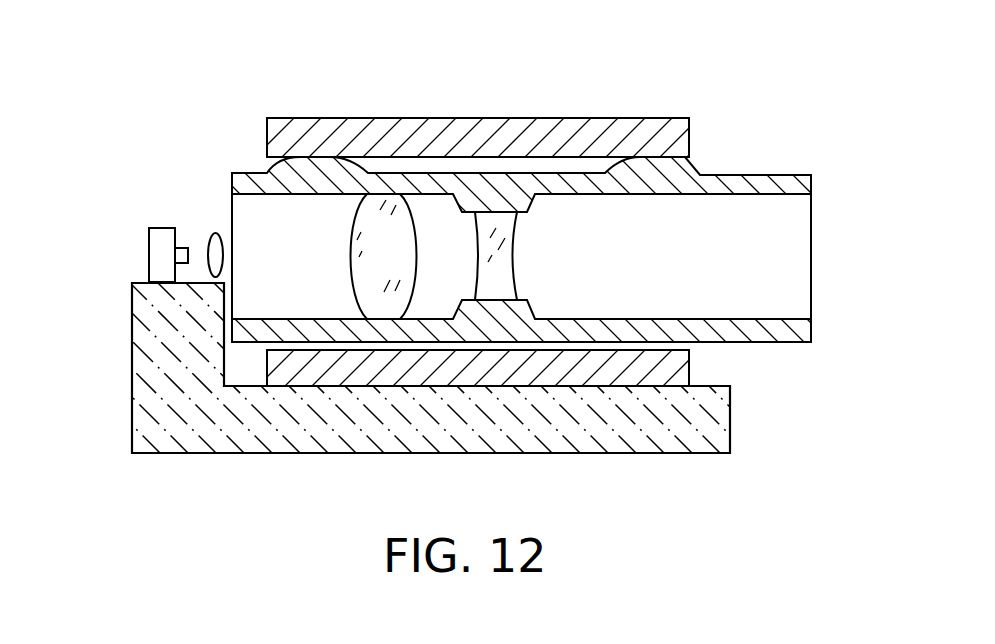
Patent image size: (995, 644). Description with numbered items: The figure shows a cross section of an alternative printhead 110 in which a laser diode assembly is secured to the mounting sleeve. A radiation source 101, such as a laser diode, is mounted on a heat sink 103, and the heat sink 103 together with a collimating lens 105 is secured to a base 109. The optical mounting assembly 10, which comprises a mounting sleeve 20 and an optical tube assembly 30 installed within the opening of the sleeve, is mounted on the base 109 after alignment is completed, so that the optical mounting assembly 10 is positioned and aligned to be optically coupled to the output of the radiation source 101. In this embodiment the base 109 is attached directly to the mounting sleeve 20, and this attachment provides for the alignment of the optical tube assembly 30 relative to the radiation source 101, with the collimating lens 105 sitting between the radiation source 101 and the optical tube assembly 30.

The optical mounting assembly 10 is at (529, 224).
The mounting sleeve 20 is at (690, 121).
The optical tube assembly 30 is at (812, 177).
The radiation source 101 is at (185, 247).
The heat sink 103 is at (149, 228).
The collimating lens 105 is at (211, 236).
The base 109 is at (320, 453).
The printhead 110 is at (459, 284).